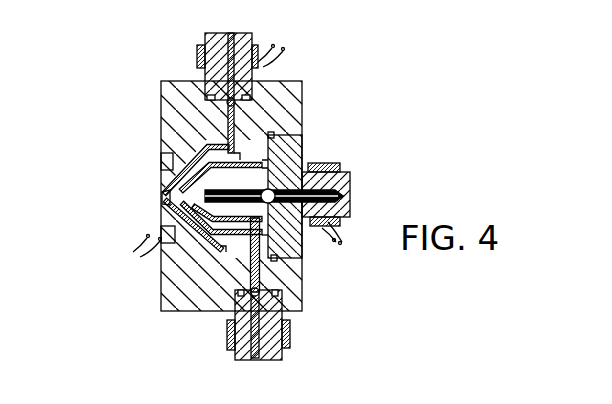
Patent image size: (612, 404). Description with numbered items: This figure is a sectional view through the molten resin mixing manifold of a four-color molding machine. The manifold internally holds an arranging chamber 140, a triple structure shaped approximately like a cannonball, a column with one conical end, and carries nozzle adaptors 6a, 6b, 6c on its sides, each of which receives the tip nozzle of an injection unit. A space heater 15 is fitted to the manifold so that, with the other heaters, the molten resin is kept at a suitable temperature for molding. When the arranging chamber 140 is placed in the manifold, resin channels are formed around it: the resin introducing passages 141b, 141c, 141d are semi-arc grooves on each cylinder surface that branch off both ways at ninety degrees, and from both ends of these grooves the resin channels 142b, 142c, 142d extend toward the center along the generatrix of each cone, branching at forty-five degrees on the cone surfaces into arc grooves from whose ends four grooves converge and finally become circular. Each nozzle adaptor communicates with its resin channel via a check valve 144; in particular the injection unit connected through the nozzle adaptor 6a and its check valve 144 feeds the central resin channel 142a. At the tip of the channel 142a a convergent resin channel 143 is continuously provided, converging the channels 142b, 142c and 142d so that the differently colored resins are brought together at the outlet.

The space heater 15 is at (163, 162).
The arranging chamber 140 is at (266, 132).
The nozzle adaptor 6a is at (350, 176).
The nozzle adaptor 6b is at (212, 38).
The nozzle adaptor 6c is at (286, 350).
The resin introducing passage 141b is at (240, 262).
The resin introducing passage 141c is at (258, 162).
The resin introducing passage 141d is at (236, 246).
The resin channel 142a is at (276, 205).
The resin channel 142b is at (195, 152).
The resin channel 142c is at (205, 240).
The resin channel 142d is at (218, 165).
The convergent resin channel 143 is at (163, 200).
The check valve 144 is at (345, 200).